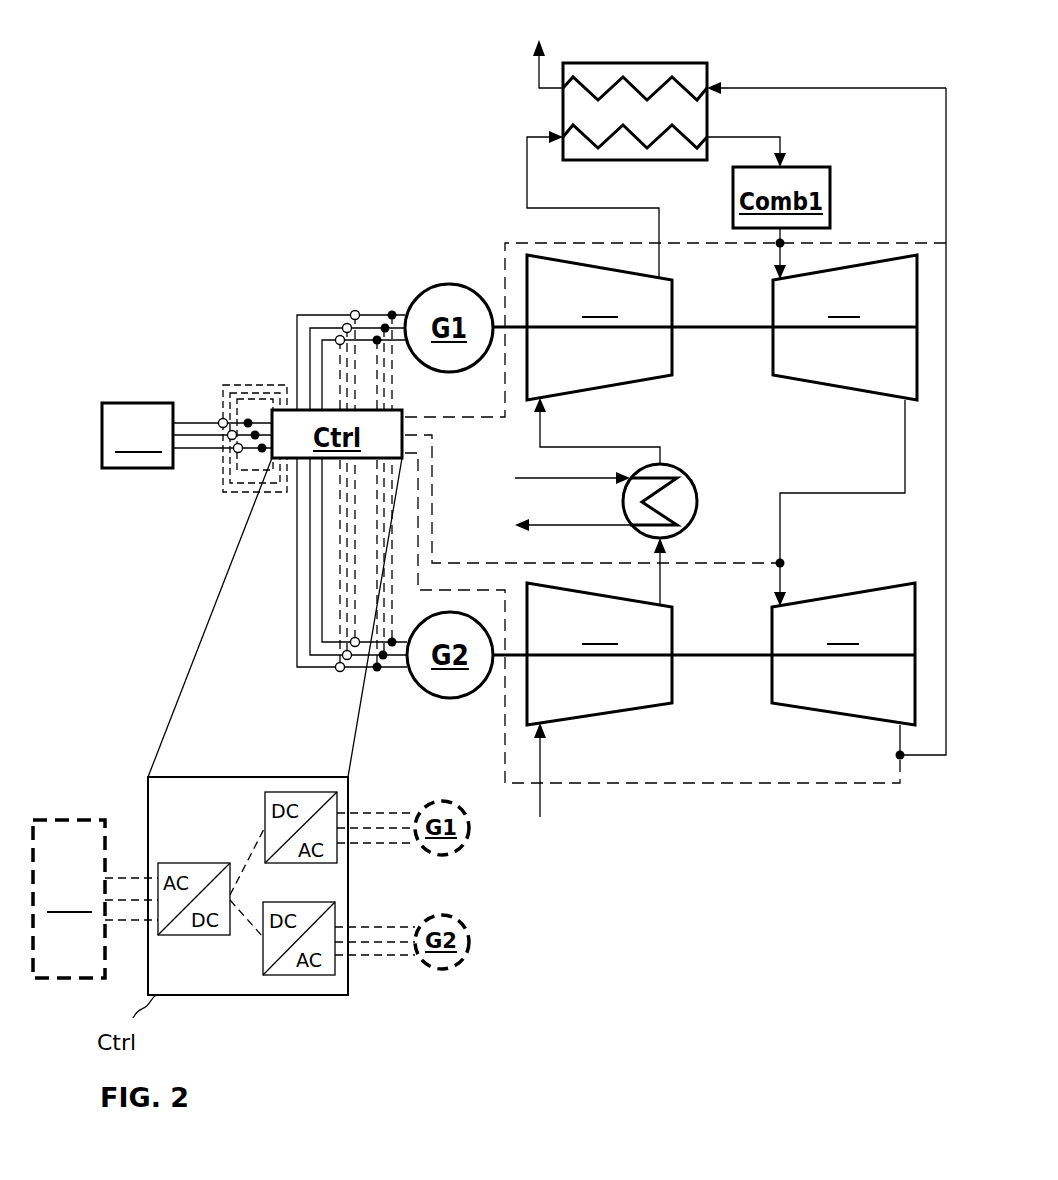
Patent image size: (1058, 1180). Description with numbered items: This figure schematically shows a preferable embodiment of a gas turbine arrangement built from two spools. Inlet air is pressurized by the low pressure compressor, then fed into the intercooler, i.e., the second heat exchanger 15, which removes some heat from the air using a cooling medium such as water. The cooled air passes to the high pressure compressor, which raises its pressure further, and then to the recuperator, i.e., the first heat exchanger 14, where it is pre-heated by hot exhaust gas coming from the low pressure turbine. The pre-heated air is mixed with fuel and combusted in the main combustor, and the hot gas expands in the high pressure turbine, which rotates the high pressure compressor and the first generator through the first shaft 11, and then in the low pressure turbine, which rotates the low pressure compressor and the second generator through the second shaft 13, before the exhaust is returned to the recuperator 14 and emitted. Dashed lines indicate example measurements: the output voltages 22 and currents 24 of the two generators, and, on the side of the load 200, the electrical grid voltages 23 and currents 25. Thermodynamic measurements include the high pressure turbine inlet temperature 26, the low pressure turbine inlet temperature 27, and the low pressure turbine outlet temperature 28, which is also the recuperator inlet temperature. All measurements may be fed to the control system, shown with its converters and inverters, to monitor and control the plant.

The first shaft 11 is at (693, 327).
The second shaft 13 is at (693, 652).
The first heat exchanger 14 is at (705, 63).
The second heat exchanger 15 is at (700, 503).
The output voltage measurements 22 is at (392, 310).
The electrical grid voltage measurements 23 is at (253, 417).
The output current measurements 24 is at (353, 310).
The electrical grid current measurements 25 is at (237, 452).
The high pressure turbine inlet temperature 26 is at (786, 243).
The low pressure turbine inlet temperature 27 is at (783, 560).
The low pressure turbine outlet temperature 28 is at (895, 755).
The load 200 is at (103, 690).